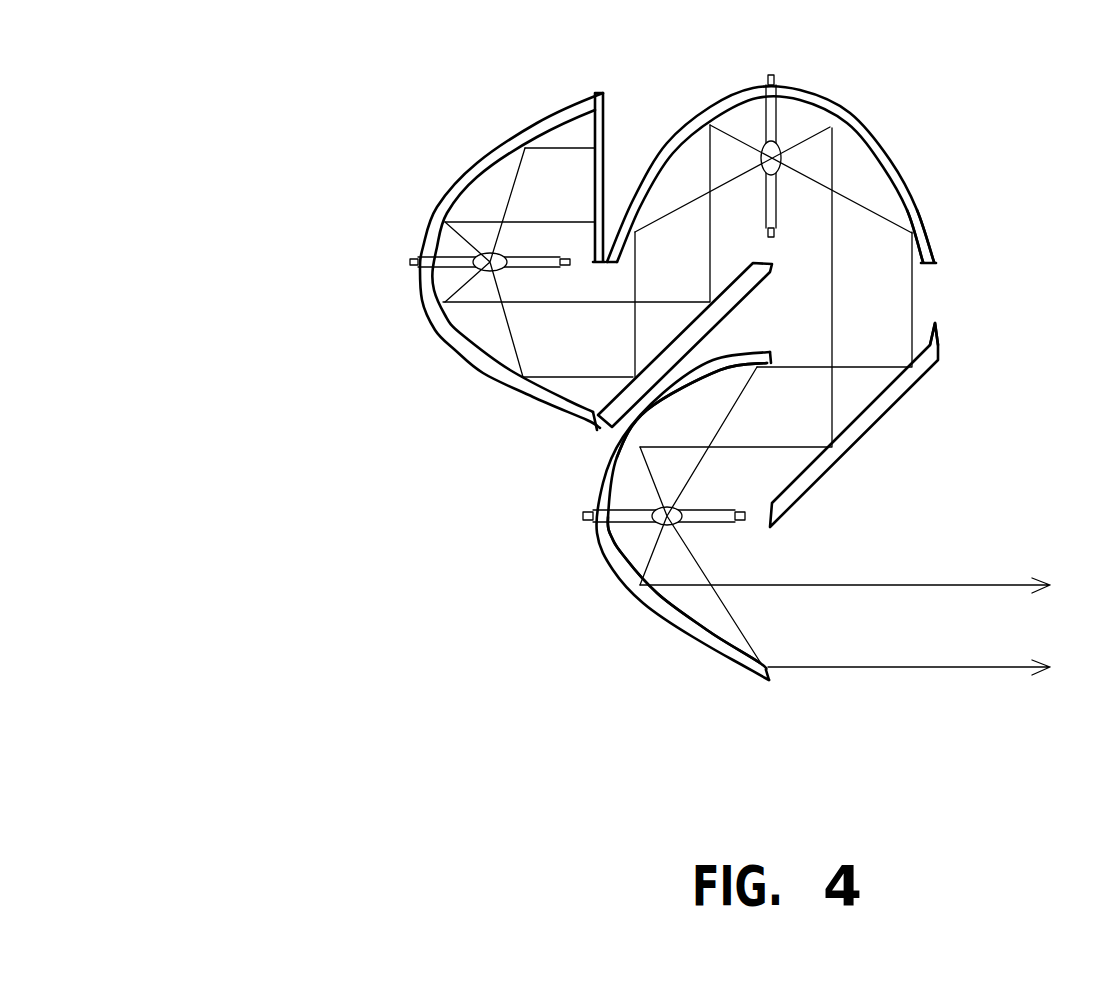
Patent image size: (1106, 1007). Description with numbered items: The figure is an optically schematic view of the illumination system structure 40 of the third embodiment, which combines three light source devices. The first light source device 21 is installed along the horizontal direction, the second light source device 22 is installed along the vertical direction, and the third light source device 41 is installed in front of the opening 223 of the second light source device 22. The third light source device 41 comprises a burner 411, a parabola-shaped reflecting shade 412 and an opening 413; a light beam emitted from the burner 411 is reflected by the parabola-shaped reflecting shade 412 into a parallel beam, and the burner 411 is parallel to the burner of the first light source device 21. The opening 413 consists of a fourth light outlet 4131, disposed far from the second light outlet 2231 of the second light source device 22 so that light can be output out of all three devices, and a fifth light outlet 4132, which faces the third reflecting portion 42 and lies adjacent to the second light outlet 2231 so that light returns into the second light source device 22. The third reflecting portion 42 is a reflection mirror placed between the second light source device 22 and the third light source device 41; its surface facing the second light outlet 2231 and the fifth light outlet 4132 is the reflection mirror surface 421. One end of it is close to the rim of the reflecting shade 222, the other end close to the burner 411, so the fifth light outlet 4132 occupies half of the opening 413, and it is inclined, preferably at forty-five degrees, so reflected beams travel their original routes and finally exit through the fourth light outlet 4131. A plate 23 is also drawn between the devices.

The first light source device 21 is at (445, 135).
The second light source device 22 is at (920, 143).
The reflecting shade 222 is at (813, 104).
The opening 223 is at (918, 265).
The second light outlet 2231 is at (850, 248).
The third reflector plate 23 is at (625, 408).
The illumination system structure 40 is at (373, 523).
The third light source device 41 is at (597, 638).
The burner 411 is at (640, 518).
The parabola-shaped reflecting shade 412 is at (717, 653).
The opening 413 is at (767, 657).
The fourth light outlet 4131 is at (745, 563).
The fifth light outlet 4132 is at (753, 417).
The third reflecting portion 42 is at (887, 402).
The reflection mirror surface 421 is at (935, 323).